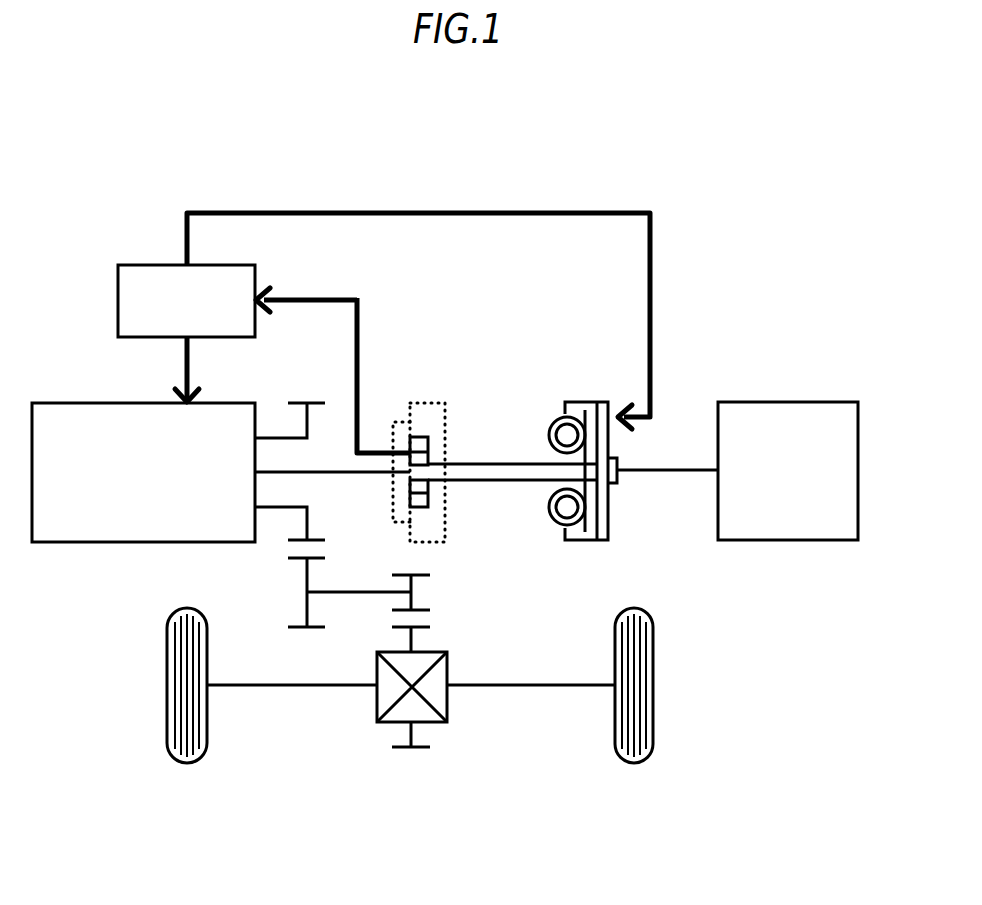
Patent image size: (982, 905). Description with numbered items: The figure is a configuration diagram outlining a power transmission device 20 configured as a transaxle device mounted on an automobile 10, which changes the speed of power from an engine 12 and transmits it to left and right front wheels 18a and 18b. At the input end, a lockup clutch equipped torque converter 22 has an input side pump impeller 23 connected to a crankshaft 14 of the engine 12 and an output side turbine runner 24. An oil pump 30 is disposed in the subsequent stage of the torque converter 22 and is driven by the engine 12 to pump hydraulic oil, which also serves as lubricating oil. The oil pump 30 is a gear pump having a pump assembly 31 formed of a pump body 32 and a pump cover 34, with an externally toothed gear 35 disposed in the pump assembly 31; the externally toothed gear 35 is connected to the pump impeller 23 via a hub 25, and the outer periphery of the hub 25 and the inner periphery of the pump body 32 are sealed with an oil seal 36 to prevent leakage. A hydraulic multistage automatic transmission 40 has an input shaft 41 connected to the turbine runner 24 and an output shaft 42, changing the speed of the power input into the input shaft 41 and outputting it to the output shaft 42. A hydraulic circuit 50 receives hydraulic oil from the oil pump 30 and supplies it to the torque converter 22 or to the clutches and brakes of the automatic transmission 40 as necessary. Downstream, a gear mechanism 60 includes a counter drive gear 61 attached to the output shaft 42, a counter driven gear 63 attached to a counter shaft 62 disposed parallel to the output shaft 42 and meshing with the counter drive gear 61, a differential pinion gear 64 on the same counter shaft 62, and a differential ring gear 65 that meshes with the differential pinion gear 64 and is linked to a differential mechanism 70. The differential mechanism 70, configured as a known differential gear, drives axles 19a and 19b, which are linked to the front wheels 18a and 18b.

The automobile 10 is at (732, 286).
The engine 12 is at (793, 402).
The crankshaft 14 is at (697, 470).
The front wheel 18a is at (653, 686).
The front wheel 18b is at (167, 686).
The axle 19a is at (566, 687).
The axle 19b is at (287, 687).
The power transmission device 20 is at (673, 298).
The lockup clutch equipped torque converter 22 is at (568, 348).
The pump impeller 23 is at (558, 417).
The turbine runner 24 is at (588, 402).
The hub 25 is at (530, 462).
The oil pump 30 is at (456, 283).
The pump assembly 31 is at (406, 340).
The pump body 32 is at (436, 402).
The pump cover 34 is at (402, 420).
The externally toothed gear 35 is at (430, 441).
The oil seal 36 is at (447, 455).
The hydraulic multistage automatic transmission 40 is at (68, 402).
The input shaft 41 is at (345, 470).
The output shaft 42 is at (278, 436).
The hydraulic circuit 50 is at (118, 297).
The gear mechanism 60 is at (496, 609).
The counter drive gear 61 is at (310, 517).
The counter shaft 62 is at (357, 590).
The counter driven gear 63 is at (306, 577).
The differential pinion gear 64 is at (412, 600).
The differential ring gear 65 is at (412, 638).
The differential mechanism 70 is at (448, 703).